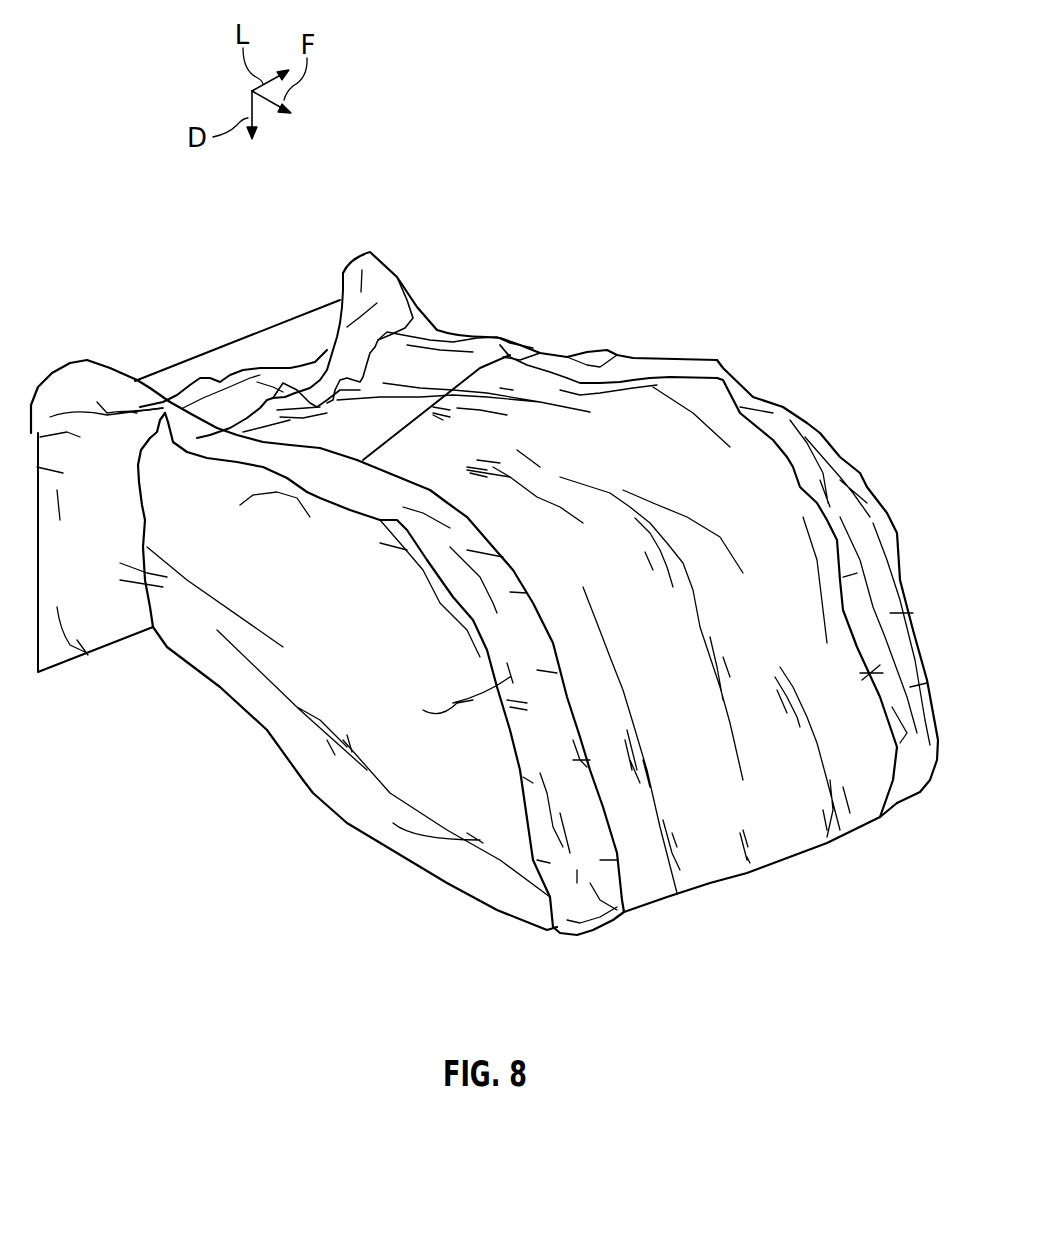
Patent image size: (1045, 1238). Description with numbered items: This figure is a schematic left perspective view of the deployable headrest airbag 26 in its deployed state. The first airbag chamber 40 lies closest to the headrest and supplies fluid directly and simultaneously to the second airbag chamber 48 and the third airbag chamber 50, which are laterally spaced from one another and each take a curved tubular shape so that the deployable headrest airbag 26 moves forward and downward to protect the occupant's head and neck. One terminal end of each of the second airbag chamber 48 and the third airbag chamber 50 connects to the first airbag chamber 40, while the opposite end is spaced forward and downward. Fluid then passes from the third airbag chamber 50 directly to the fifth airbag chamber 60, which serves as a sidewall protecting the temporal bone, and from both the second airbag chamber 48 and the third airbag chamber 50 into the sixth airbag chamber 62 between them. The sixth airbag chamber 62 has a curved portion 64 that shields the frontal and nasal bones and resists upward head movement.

The deployable headrest airbag 26 is at (490, 625).
The first airbag chamber 40 is at (255, 348).
The second airbag chamber 48 is at (873, 540).
The third airbag chamber 50 is at (613, 920).
The fifth airbag chamber 60 is at (360, 820).
The sixth airbag chamber 62 is at (800, 837).
The curved portion 64 is at (782, 527).